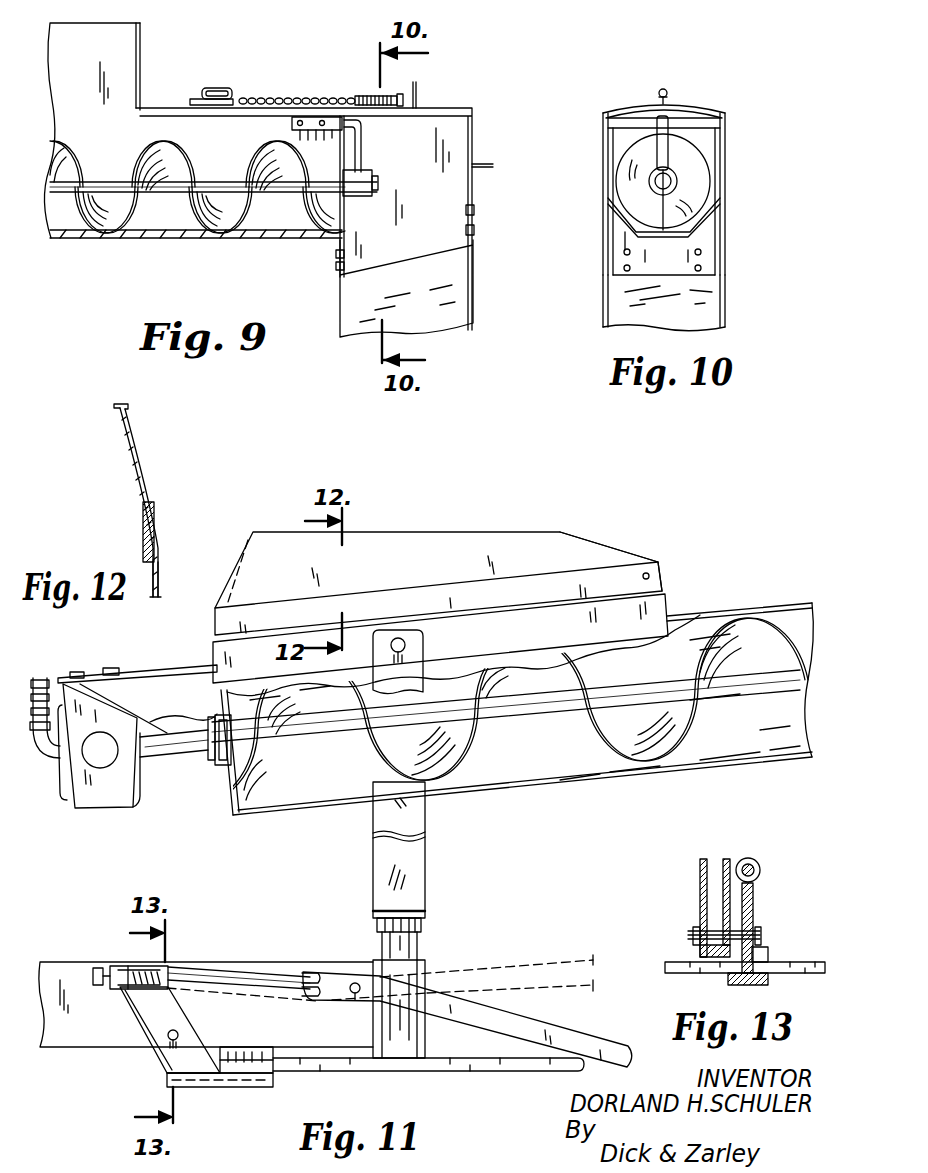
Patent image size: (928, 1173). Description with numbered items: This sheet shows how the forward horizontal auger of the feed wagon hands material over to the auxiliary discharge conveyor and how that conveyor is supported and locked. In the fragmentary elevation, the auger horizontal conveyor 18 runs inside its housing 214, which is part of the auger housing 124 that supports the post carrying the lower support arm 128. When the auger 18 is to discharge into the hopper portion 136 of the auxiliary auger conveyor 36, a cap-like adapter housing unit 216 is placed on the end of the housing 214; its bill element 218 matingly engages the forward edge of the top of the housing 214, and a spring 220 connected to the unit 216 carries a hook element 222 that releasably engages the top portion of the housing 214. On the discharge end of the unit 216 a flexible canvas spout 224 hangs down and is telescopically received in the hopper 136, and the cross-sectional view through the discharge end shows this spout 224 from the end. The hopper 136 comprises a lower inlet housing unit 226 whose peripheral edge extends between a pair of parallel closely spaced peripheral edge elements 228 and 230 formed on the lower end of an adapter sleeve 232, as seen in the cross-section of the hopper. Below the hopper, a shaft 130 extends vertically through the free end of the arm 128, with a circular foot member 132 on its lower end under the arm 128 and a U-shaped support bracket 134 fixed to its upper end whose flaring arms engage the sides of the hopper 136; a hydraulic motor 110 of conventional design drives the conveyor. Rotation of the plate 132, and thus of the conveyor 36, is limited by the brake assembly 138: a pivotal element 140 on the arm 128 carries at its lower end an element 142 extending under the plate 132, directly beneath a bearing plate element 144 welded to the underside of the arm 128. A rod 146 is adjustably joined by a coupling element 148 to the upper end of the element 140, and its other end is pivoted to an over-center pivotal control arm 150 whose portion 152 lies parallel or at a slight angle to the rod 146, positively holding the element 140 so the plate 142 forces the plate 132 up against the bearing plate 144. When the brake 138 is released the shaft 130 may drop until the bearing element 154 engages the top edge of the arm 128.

In FIG. 9, the auger horizontal conveyor 18 is at (108, 220).
In FIG. 11, the auxiliary auger conveyor 36 is at (734, 605).
In FIG. 11, the hydraulic motor 110 is at (93, 802).
In FIG. 9, the auger housing 124 is at (142, 47).
In FIG. 11, the lower support arm 128 is at (65, 972).
In FIG. 13, the lower support arm 128 is at (700, 891).
In FIG. 11, the shaft 130 is at (420, 946).
In FIG. 11, the circular foot member 132 is at (356, 1072).
In FIG. 13, the circular foot member 132 is at (677, 962).
In FIG. 11, the U-shaped support bracket 134 is at (425, 872).
In FIG. 11, the hopper portion 136 is at (565, 537).
In FIG. 11, the brake assembly 138 is at (158, 1065).
In FIG. 11, the pivotal element 140 is at (148, 1018).
In FIG. 13, the pivotal element 140 is at (757, 906).
In FIG. 11, the element 142 is at (205, 1087).
In FIG. 13, the element 142 is at (745, 985).
In FIG. 11, the bearing plate element 144 is at (230, 1050).
In FIG. 13, the bearing plate element 144 is at (768, 958).
In FIG. 11, the rod 146 is at (220, 970).
In FIG. 13, the rod 146 is at (762, 871).
In FIG. 11, the coupling element 148 is at (140, 965).
In FIG. 13, the coupling element 148 is at (755, 860).
In FIG. 11, the pivotal control arm 150 is at (540, 1026).
In FIG. 11, the portion 152 is at (325, 975).
In FIG. 11, the bearing element 154 is at (421, 925).
In FIG. 9, the auger housing 214 is at (237, 238).
In FIG. 9, the adapter housing unit 216 is at (453, 107).
In FIG. 9, the bill element 218 is at (294, 96).
In FIG. 9, the spring 220 is at (388, 90).
In FIG. 9, the hook element 222 is at (237, 90).
In FIG. 9, the spout 224 is at (477, 281).
In FIG. 10, the spout 224 is at (727, 300).
In FIG. 12, the lower inlet housing unit 226 is at (160, 582).
In FIG. 11, the lower inlet housing unit 226 is at (658, 610).
In FIG. 12, the peripheral edge element 228 is at (161, 543).
In FIG. 12, the peripheral edge element 230 is at (142, 545).
In FIG. 11, the adapter sleeve 232 is at (403, 543).